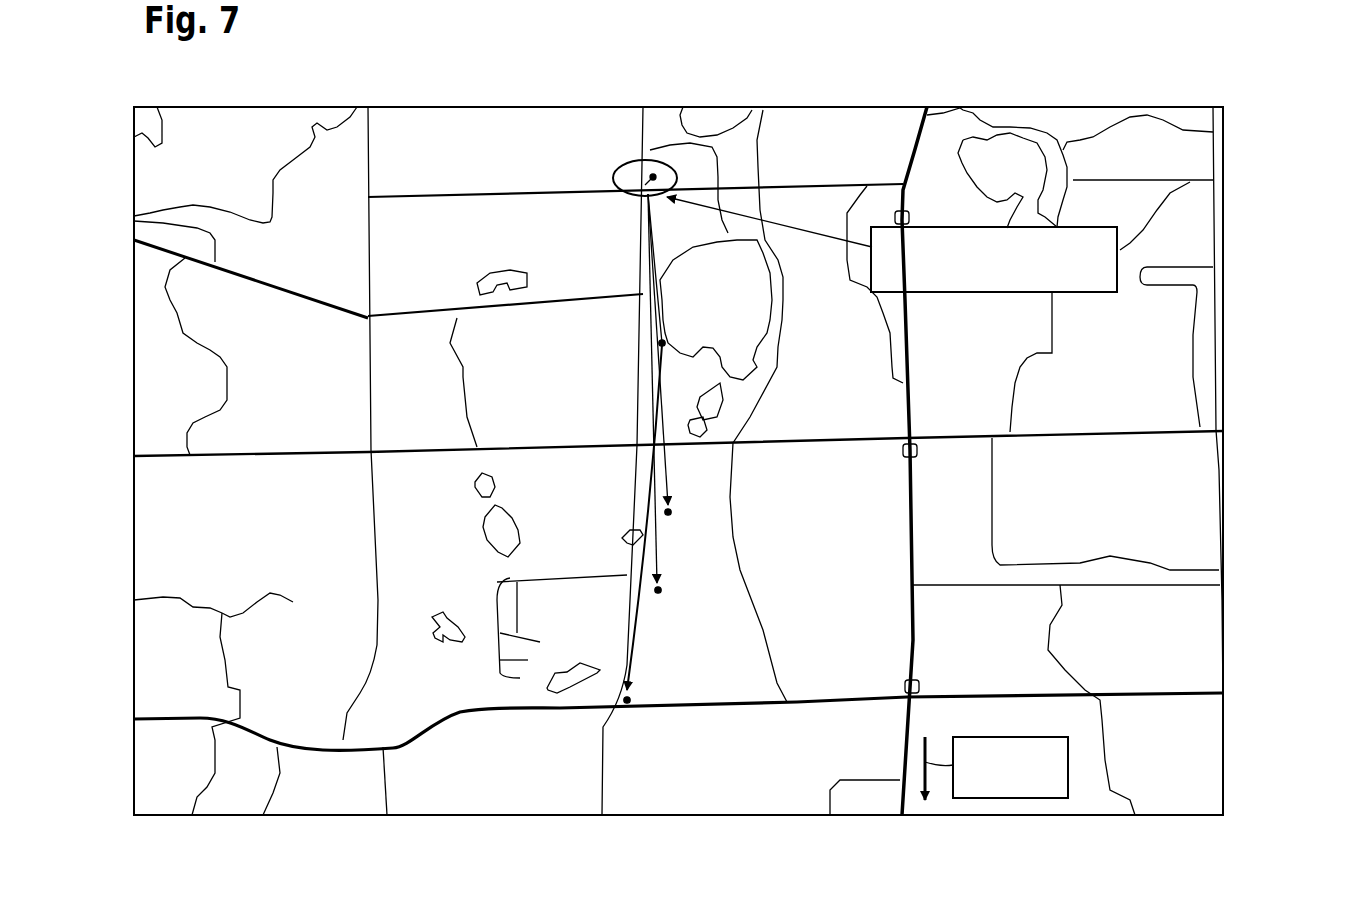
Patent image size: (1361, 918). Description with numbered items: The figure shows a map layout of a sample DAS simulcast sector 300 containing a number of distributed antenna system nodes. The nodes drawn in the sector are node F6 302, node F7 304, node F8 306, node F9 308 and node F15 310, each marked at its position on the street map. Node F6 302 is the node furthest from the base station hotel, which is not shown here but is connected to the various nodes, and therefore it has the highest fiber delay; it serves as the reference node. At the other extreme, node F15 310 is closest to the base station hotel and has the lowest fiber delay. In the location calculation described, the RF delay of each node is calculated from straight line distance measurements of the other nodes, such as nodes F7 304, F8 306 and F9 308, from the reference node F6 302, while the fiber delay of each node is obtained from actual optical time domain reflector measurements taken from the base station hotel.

The DAS simulcast sector 300 is at (1258, 152).
The DAS node F6 302 is at (612, 160).
The DAS node F7 304 is at (650, 347).
The DAS node F8 306 is at (675, 525).
The DAS node F9 308 is at (660, 605).
The DAS node F15 310 is at (623, 710).